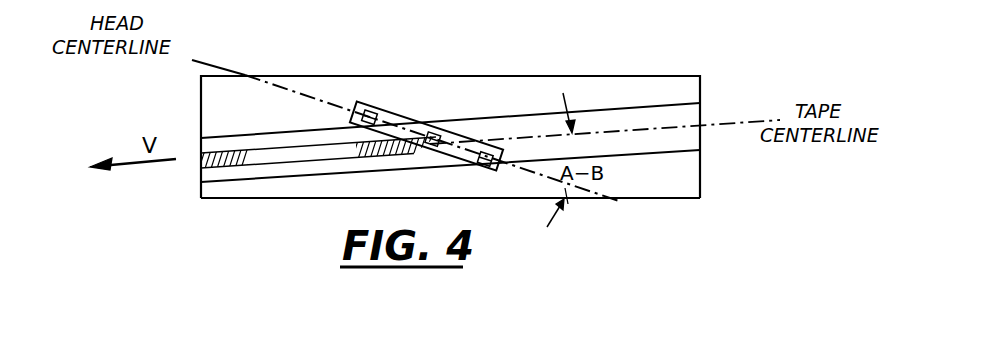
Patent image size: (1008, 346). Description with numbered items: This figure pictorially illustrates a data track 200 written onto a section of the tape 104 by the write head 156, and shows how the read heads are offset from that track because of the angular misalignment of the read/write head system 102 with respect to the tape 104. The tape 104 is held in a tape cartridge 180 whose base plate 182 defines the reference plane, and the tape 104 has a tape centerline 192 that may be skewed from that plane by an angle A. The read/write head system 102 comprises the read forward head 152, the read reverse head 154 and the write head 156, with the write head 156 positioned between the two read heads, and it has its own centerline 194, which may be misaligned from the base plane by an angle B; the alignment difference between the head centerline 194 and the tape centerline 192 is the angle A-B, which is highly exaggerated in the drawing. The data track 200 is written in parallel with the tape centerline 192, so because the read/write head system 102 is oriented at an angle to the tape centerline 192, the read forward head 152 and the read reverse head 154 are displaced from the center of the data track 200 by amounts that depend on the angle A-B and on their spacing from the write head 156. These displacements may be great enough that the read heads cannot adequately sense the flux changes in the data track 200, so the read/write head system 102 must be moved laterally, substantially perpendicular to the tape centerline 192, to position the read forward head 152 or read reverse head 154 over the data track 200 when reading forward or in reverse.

The read/write head system 102 is at (446, 126).
The tape 104 is at (487, 124).
The read forward head 152 is at (383, 100).
The read reverse head 154 is at (495, 174).
The write head 156 is at (436, 152).
The tape cartridge 180 is at (300, 75).
The base plate 182 is at (297, 199).
The tape centerline 192 is at (735, 122).
The centerline 194 is at (218, 65).
The data track 200 is at (227, 151).